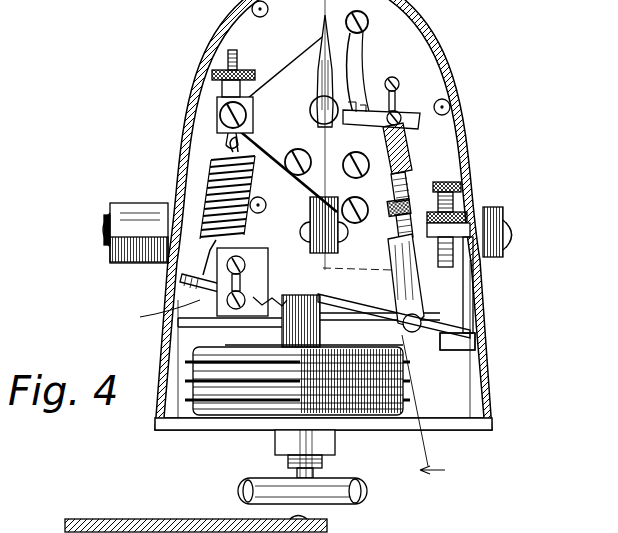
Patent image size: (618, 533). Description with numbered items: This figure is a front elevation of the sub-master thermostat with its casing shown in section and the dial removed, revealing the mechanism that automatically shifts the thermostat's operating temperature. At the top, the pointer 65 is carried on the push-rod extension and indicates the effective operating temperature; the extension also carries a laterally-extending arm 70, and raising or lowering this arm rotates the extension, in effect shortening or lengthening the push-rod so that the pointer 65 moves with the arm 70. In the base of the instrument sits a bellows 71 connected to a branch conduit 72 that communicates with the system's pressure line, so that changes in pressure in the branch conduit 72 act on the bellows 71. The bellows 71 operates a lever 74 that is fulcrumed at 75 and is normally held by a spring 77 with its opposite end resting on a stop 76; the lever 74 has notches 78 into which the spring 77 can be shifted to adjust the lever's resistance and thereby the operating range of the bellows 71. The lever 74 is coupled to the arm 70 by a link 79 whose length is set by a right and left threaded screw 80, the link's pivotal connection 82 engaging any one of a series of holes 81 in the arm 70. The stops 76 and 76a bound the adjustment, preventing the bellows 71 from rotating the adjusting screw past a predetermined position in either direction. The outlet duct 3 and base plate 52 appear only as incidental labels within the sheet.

The outlet duct 3 is at (423, 416).
The base plate 52 is at (219, 525).
The pointer 65 is at (322, 28).
The laterally-extending arm 70 is at (345, 80).
The bellows 71 is at (250, 393).
The branch conduit 72 is at (342, 488).
The lever 74 is at (383, 325).
The fulcrum 75 is at (268, 290).
The stop 76 is at (472, 337).
The stop 76a is at (461, 189).
The spring 77 is at (205, 188).
The notches 78 is at (180, 308).
The link 79 is at (405, 158).
The right and left threaded screw 80 is at (414, 188).
The holes 81 is at (418, 120).
The pivotal connection 82 is at (400, 107).